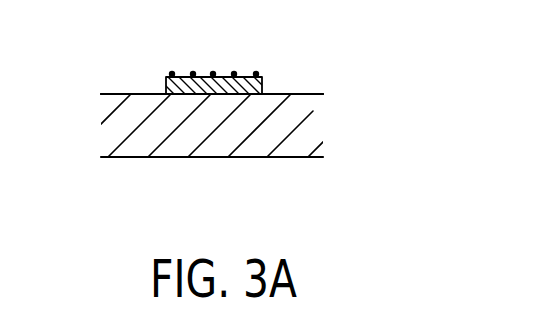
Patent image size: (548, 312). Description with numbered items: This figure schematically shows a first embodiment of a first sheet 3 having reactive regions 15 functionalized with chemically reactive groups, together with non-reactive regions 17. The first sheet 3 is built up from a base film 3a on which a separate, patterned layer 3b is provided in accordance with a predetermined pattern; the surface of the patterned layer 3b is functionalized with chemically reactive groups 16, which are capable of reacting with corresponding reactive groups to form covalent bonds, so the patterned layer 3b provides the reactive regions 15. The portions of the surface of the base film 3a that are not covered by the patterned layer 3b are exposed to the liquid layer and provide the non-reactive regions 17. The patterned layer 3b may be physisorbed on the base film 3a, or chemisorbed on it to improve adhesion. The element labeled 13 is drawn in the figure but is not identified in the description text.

The first sheet 3 is at (256, 124).
The base film 3a is at (303, 142).
The patterned layer 3b is at (251, 95).
The wiring pattern 13 is at (113, 93).
The reactive regions 15 is at (205, 77).
The chemically reactive groups 16 is at (233, 71).
The non-reactive regions 17 is at (148, 93).